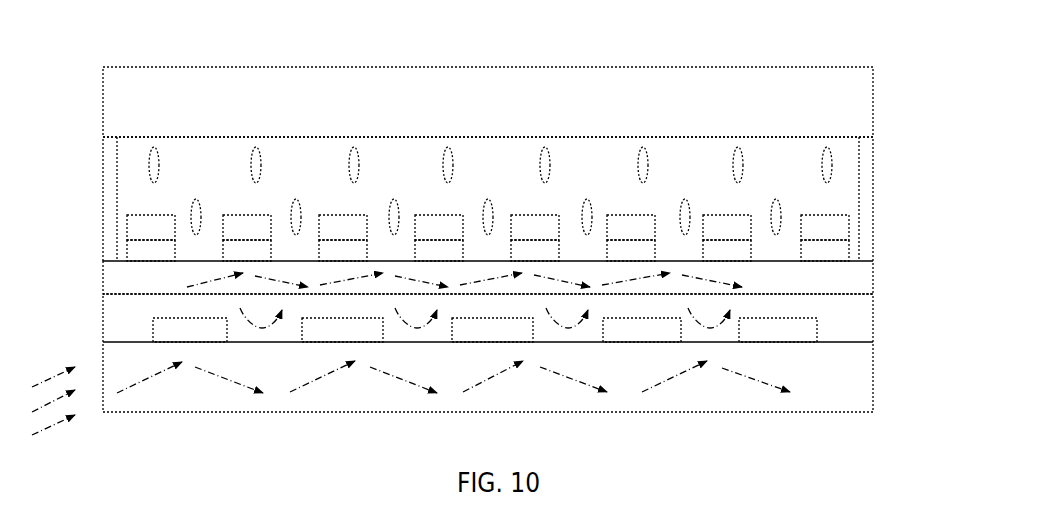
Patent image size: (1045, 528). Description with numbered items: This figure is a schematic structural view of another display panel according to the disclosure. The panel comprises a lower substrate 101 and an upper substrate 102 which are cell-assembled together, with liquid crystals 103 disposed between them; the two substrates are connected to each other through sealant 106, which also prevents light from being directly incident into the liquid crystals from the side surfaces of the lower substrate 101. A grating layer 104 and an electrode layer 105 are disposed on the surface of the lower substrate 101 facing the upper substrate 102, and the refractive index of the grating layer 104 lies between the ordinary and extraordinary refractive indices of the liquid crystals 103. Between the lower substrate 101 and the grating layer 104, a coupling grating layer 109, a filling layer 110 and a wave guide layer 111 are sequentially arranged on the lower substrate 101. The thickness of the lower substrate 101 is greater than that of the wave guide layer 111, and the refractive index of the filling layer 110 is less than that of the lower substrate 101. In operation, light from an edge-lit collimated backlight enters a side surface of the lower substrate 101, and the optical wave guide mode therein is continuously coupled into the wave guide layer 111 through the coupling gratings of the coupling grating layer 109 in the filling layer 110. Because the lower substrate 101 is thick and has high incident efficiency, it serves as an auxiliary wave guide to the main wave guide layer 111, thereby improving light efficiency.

The lower substrate 101 is at (873, 400).
The upper substrate 102 is at (873, 110).
The liquid crystals 103 is at (833, 170).
The grating layer 104 is at (850, 253).
The electrode layer 105 is at (850, 230).
The sealant 106 is at (873, 191).
The coupling grating layer 109 is at (817, 318).
The filling layer 110 is at (865, 339).
The wave guide layer 111 is at (862, 291).